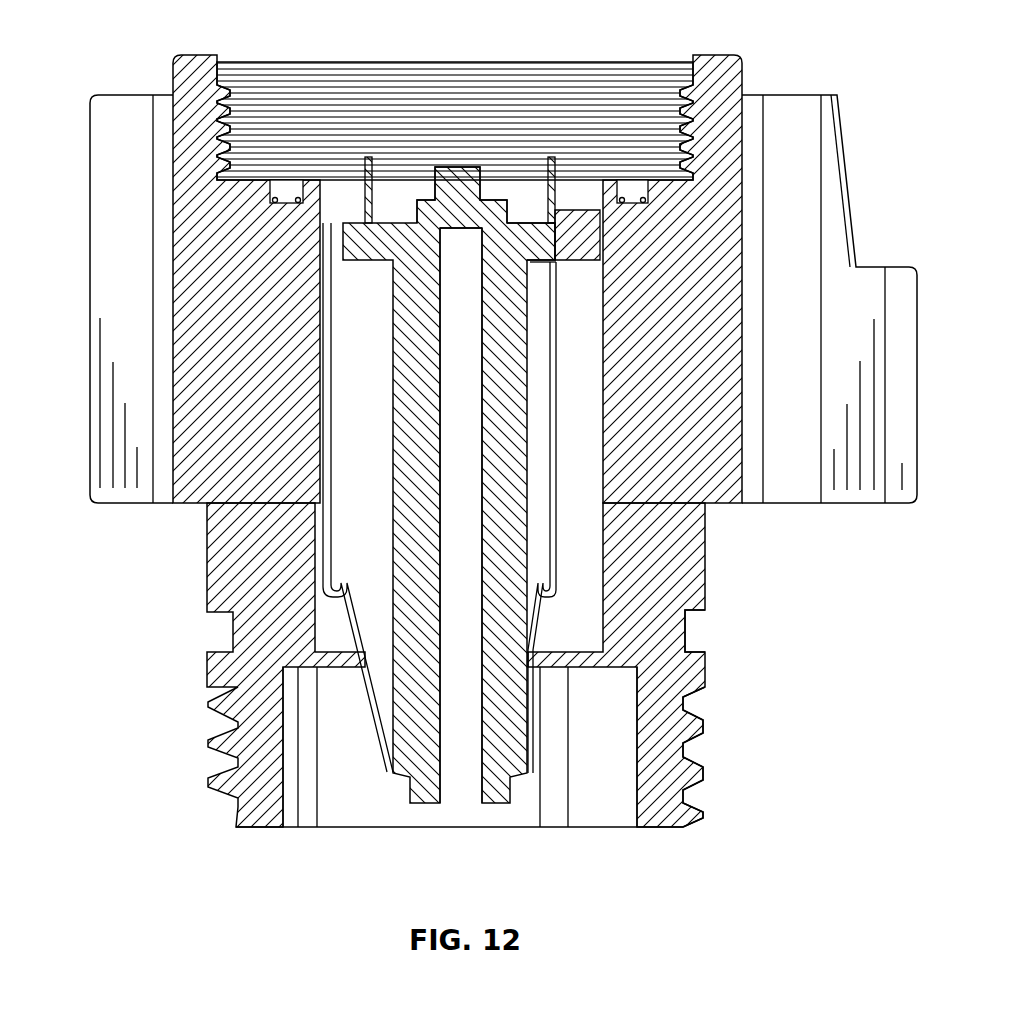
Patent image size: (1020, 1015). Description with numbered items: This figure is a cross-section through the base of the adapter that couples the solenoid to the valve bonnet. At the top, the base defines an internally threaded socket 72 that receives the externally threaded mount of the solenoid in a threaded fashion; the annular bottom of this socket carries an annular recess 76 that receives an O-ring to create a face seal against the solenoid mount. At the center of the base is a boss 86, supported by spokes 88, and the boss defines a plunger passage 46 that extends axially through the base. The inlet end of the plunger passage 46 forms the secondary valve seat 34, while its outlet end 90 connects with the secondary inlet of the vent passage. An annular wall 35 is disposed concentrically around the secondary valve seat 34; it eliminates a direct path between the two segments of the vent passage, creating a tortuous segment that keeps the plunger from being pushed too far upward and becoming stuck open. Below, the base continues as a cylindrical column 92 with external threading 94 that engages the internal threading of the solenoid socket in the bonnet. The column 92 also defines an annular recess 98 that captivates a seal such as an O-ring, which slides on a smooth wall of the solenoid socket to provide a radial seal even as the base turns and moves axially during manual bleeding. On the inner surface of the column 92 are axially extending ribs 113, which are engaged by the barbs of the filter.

The secondary valve seat 34 is at (480, 182).
The annular wall 35 is at (600, 209).
The plunger passage 46 is at (400, 430).
The internally threaded socket 72 is at (655, 77).
The annular recess 76 is at (290, 182).
The boss 86 is at (523, 236).
The spokes 88 is at (345, 543).
The outlet end 90 is at (505, 805).
The cylindrical column 92 is at (705, 570).
The external threading 94 is at (692, 727).
The annular recess 98 is at (687, 634).
The axially extending ribs 113 is at (307, 818).